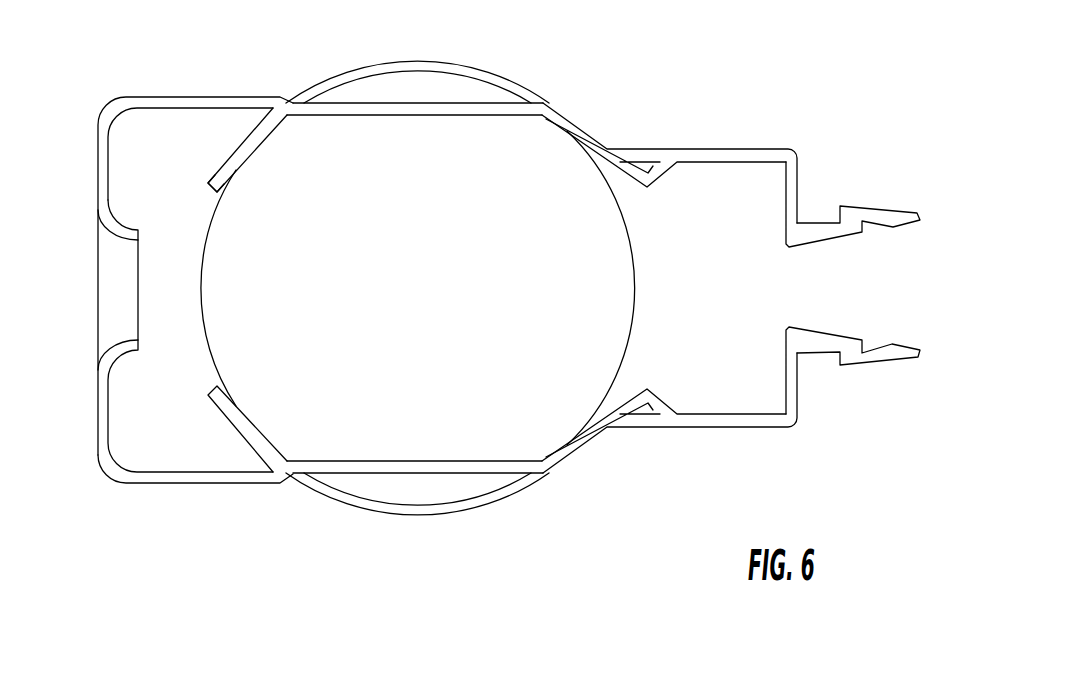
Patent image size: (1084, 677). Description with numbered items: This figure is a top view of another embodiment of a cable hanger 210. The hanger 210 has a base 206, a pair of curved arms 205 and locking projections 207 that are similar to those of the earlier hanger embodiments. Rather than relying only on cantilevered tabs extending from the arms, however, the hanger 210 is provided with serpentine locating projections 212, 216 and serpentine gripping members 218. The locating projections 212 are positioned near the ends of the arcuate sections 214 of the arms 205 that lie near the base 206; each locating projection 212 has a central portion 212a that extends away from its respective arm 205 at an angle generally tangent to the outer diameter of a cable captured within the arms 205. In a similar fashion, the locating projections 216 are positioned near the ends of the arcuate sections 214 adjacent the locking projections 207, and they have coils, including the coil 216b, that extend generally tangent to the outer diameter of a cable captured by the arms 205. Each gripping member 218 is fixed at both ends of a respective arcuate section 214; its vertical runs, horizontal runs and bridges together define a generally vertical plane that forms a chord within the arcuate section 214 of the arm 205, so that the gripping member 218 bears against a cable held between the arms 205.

The curved arm 205 is at (542, 66).
The base 206 is at (97, 163).
The locking projection 207 is at (865, 360).
The cable hanger 210 is at (853, 132).
The locating projection 212 is at (243, 117).
The central portion 212a is at (227, 162).
The arcuate section 214 is at (352, 80).
The locating projection 216 is at (637, 154).
The coil 216b is at (652, 170).
The gripping member 218 is at (467, 112).